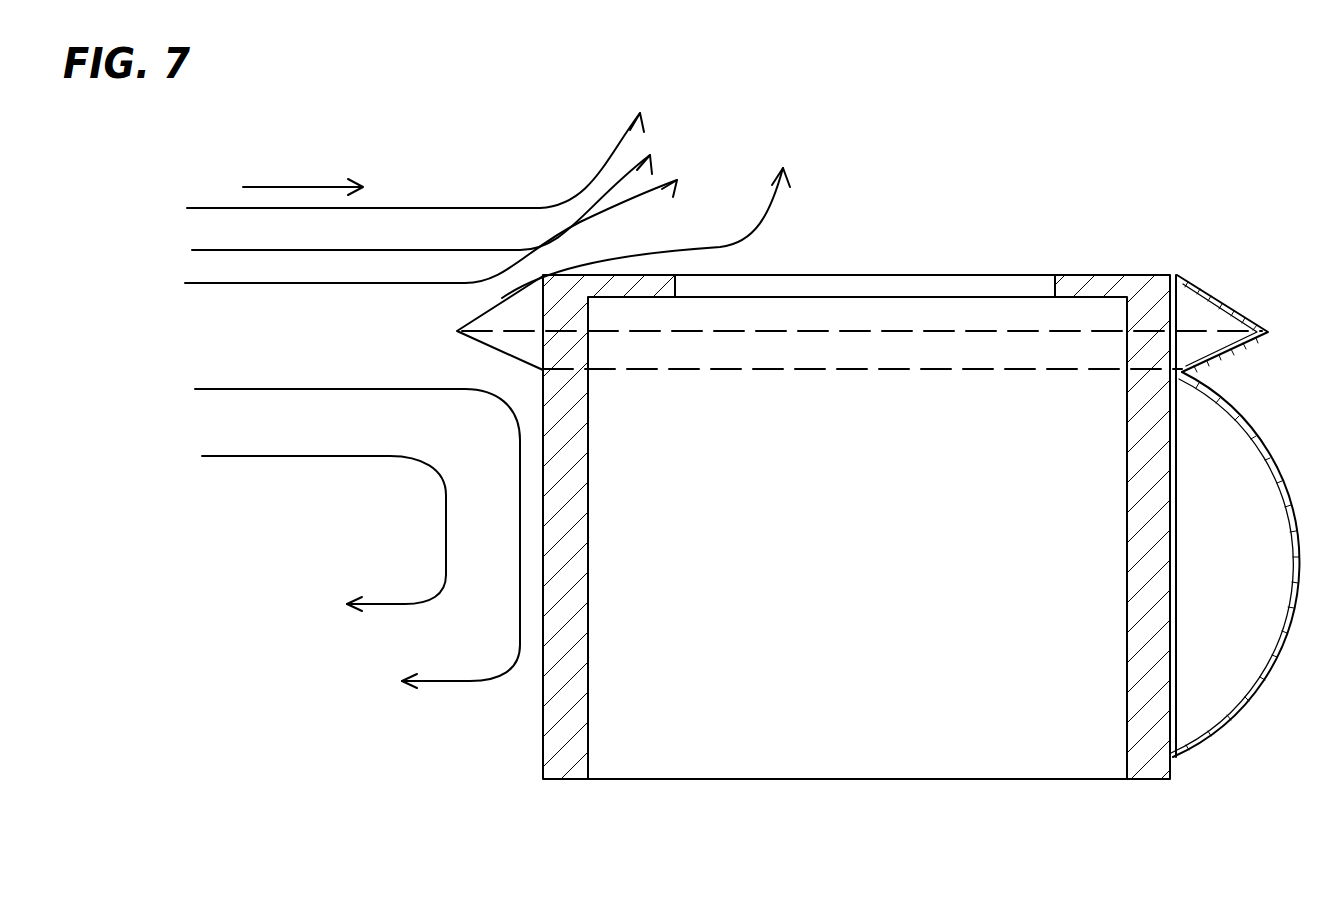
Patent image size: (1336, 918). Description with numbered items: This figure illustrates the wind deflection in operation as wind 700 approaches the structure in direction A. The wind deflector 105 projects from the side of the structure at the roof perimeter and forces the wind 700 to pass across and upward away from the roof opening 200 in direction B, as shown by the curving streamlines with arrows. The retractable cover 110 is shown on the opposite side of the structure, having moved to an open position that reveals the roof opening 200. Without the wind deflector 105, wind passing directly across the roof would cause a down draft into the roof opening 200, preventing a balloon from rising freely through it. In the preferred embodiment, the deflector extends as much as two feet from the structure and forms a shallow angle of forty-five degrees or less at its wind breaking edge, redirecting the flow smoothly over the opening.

The wind deflector 105 is at (497, 361).
The retractable cover 110 is at (1237, 706).
The roof opening 200 is at (999, 287).
The wind 700 is at (257, 270).